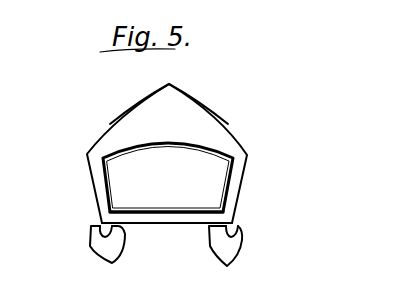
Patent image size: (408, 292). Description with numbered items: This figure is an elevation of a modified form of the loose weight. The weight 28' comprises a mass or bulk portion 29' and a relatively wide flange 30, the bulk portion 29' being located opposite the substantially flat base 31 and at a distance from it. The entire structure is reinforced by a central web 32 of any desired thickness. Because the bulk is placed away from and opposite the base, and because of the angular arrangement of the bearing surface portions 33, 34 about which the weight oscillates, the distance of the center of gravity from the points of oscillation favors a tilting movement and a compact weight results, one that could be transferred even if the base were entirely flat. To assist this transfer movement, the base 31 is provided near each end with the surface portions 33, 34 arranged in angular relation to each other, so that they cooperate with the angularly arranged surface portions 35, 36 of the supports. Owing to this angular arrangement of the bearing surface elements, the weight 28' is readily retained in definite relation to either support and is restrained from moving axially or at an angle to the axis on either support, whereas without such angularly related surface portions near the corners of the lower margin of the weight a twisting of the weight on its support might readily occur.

The weight 28' is at (182, 153).
The mass or bulk portion 29' is at (180, 104).
The flange 30 is at (242, 172).
The base 31 is at (190, 222).
The central web 32 is at (205, 190).
The bearing surface portion 33 is at (106, 228).
The bearing surface portion 34 is at (234, 222).
The surface portion of support 35 is at (104, 237).
The surface portion of support 36 is at (243, 247).